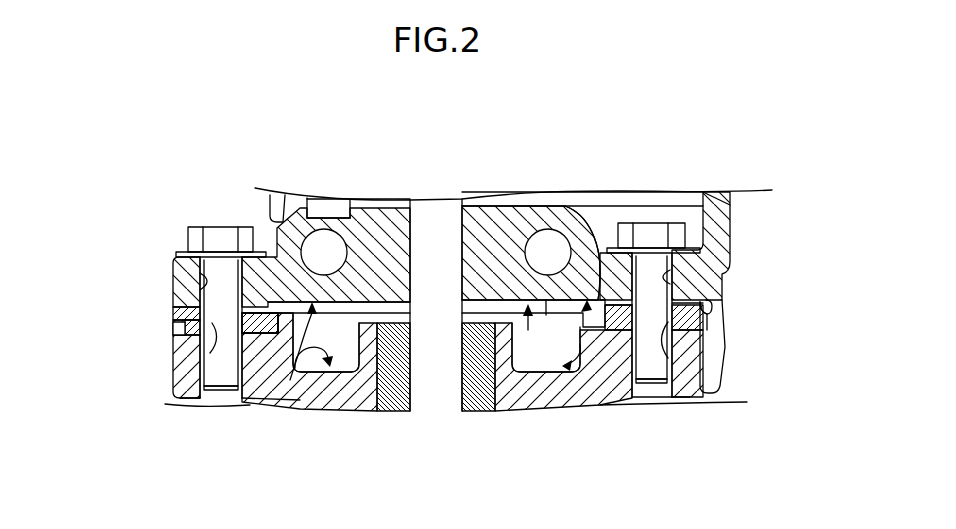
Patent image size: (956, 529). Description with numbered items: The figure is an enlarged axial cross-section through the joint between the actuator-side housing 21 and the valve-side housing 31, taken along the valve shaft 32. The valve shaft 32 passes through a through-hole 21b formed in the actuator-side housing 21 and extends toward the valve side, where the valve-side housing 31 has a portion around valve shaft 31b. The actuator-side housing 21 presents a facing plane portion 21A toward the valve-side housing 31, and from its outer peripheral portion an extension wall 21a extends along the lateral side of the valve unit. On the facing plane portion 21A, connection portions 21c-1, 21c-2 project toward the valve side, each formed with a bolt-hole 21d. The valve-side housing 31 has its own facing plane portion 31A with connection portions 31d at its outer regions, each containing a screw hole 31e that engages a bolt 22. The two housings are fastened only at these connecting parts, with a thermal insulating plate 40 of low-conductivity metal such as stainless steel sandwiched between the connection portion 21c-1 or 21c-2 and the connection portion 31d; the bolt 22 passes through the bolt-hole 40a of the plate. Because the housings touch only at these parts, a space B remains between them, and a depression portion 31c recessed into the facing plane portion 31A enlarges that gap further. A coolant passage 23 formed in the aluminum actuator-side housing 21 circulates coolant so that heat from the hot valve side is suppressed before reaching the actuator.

The actuator-side housing 21 is at (178, 285).
The extension wall 21a is at (718, 366).
The through-hole 21b is at (396, 228).
The connection portion 21c-1 is at (693, 310).
The connection portion 21c-2 is at (176, 313).
The bolt-hole 21d is at (208, 282).
The facing plane portion 21A is at (250, 333).
The bolt 22 is at (222, 227).
The coolant passage 23 is at (326, 247).
The valve-side housing 31 is at (182, 371).
The facing plane portion 31A is at (594, 290).
The portion around valve shaft 31b is at (523, 411).
The depression portion 31c is at (293, 375).
The connection portion 31d is at (212, 323).
The screw hole 31e is at (207, 402).
The valve shaft 32 is at (440, 218).
The thermal insulating plate 40 is at (177, 329).
The bolt-hole 40a is at (183, 383).
The space B is at (546, 315).